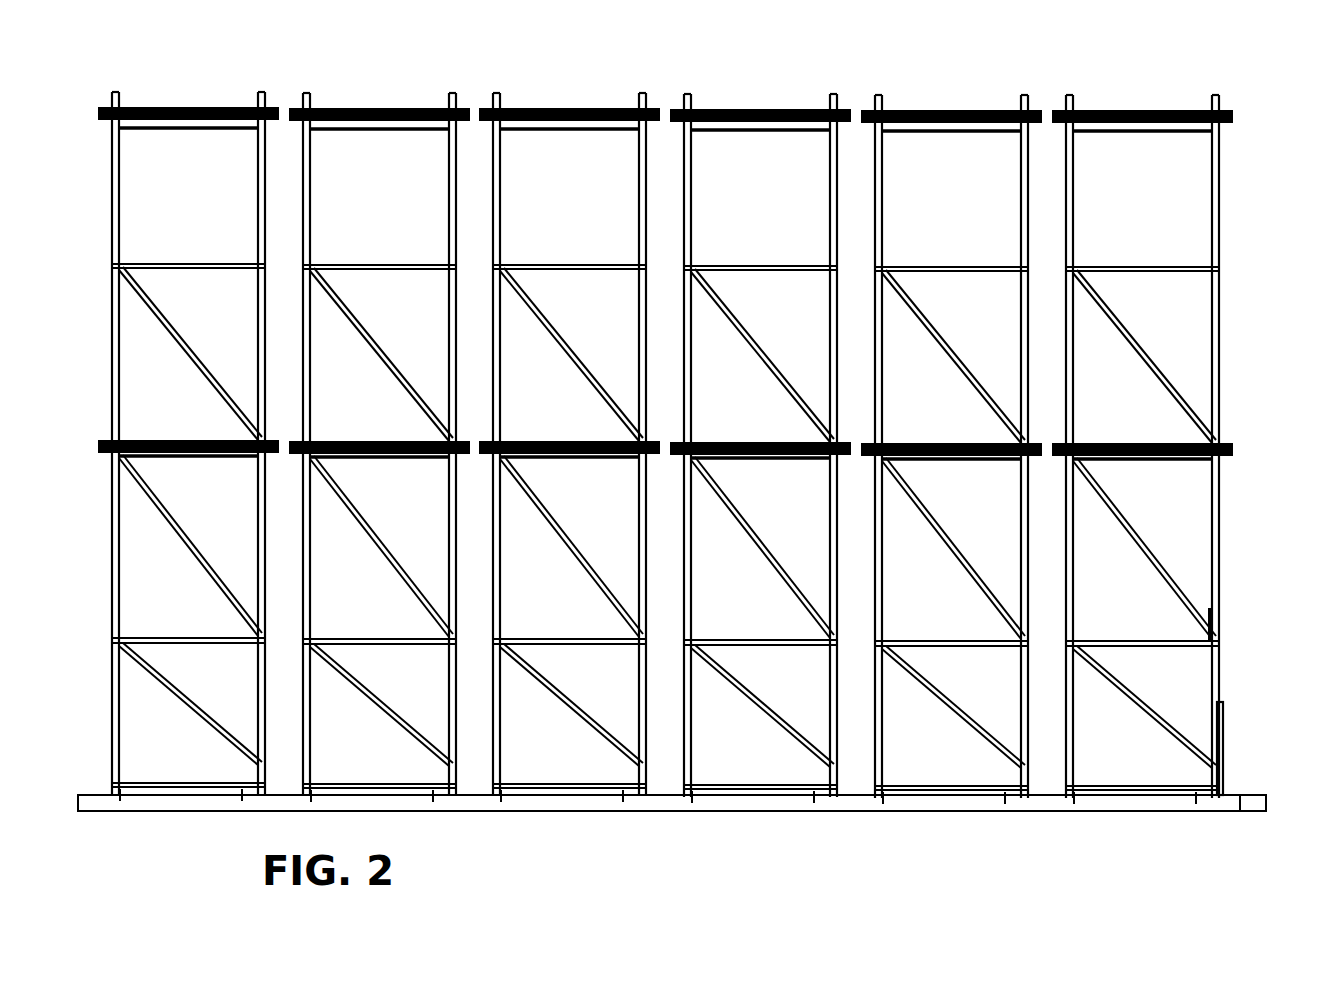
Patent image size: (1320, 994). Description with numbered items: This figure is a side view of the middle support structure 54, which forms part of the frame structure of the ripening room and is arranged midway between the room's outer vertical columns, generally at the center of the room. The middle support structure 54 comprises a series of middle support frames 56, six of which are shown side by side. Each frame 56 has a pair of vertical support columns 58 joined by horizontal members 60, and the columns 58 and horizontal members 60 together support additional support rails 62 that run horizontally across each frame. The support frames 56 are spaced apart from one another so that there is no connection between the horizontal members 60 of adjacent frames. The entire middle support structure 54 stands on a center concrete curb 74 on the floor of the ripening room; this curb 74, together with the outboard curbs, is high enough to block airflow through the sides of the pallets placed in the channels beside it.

The middle support structure 54 is at (1242, 357).
The middle support frame 56 is at (218, 64).
The vertical support column 58 is at (874, 480).
The horizontal member 60 is at (937, 117).
The support rail 62 is at (348, 110).
The center concrete curb 74 is at (791, 803).